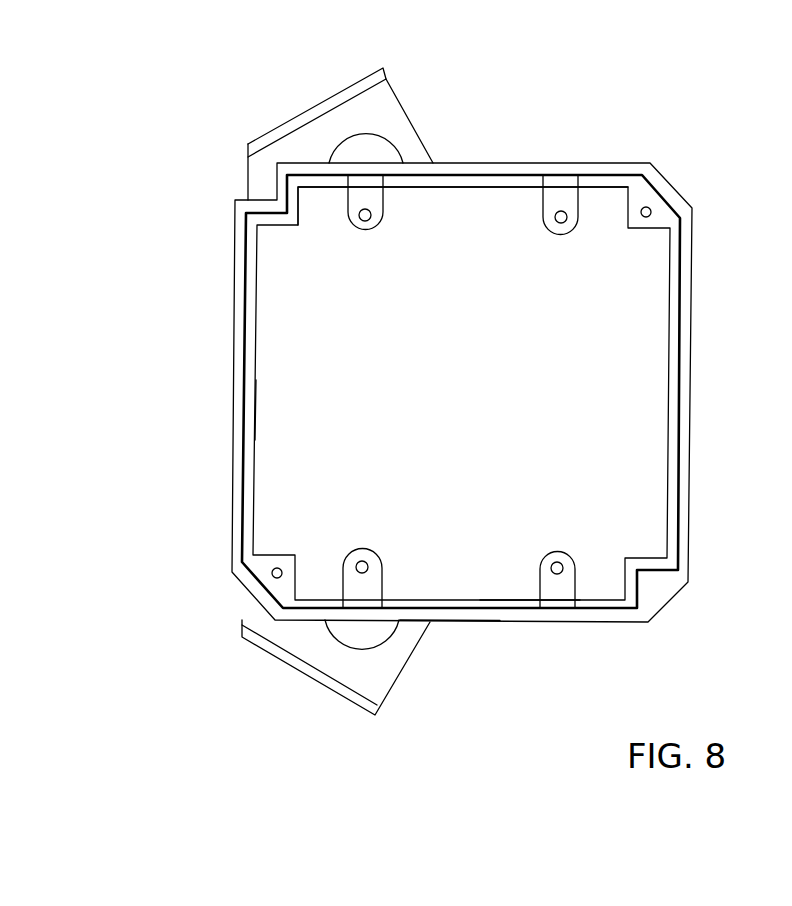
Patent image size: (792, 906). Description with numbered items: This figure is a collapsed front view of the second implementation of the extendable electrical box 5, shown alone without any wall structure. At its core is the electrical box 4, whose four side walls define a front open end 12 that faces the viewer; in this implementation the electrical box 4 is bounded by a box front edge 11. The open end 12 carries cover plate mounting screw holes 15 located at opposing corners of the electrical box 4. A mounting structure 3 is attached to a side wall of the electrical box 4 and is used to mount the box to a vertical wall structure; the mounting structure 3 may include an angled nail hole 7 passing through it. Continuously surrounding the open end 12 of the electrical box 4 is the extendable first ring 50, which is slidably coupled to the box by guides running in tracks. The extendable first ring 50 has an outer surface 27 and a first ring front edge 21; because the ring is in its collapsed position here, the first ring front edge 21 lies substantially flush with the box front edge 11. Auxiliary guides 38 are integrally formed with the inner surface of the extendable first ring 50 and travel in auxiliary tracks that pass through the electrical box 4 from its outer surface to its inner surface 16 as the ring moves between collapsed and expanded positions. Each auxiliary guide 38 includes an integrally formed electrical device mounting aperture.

The extendable electrical box 5 is at (183, 93).
The mounting structure 3 is at (305, 135).
The angled nail hole 7 is at (385, 72).
The auxiliary guide 38 is at (577, 213).
The cover plate mounting screw hole 15 is at (651, 209).
The outer surface 27 is at (693, 282).
The extendable first ring 50 is at (683, 373).
The electrical box 4 is at (672, 478).
The first ring front edge 21 is at (450, 617).
The box front edge 11 is at (533, 602).
The open end 12 is at (517, 522).
The inner surface 16 is at (252, 401).